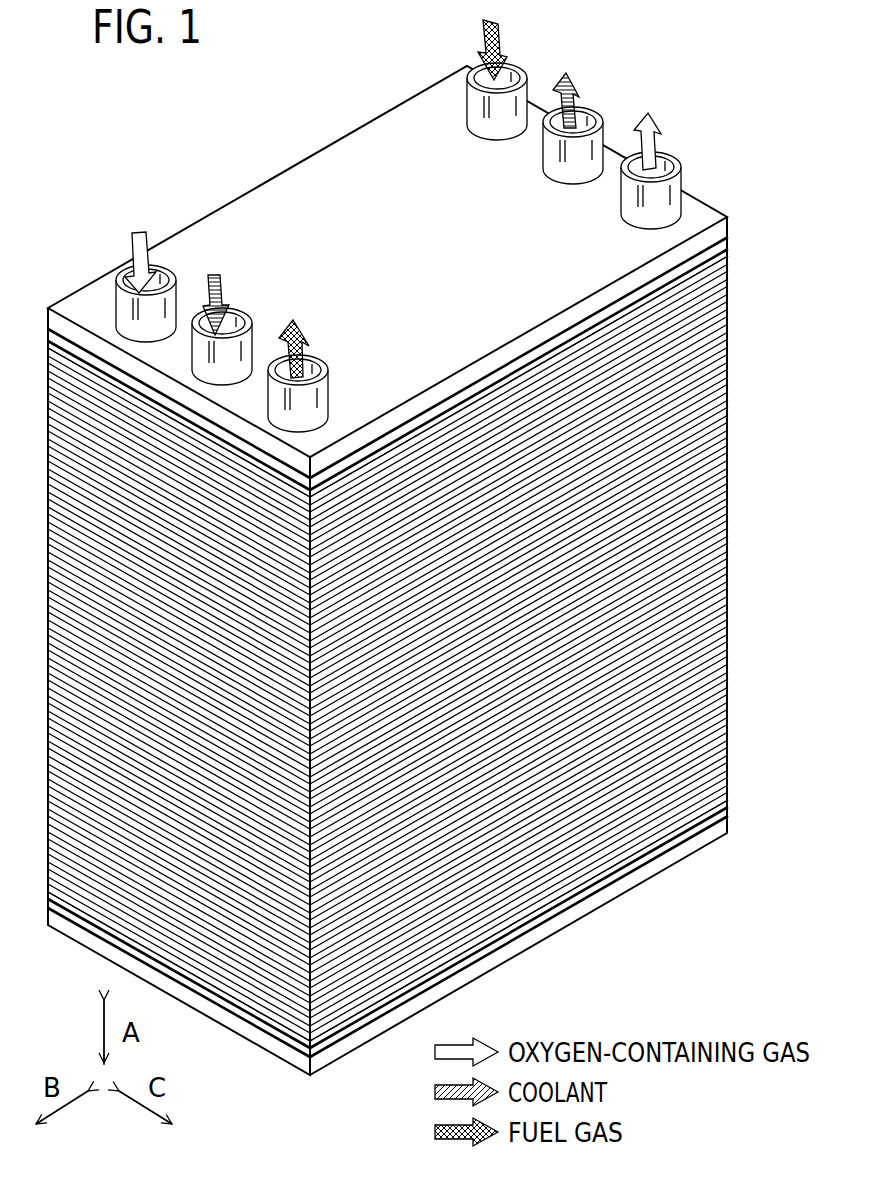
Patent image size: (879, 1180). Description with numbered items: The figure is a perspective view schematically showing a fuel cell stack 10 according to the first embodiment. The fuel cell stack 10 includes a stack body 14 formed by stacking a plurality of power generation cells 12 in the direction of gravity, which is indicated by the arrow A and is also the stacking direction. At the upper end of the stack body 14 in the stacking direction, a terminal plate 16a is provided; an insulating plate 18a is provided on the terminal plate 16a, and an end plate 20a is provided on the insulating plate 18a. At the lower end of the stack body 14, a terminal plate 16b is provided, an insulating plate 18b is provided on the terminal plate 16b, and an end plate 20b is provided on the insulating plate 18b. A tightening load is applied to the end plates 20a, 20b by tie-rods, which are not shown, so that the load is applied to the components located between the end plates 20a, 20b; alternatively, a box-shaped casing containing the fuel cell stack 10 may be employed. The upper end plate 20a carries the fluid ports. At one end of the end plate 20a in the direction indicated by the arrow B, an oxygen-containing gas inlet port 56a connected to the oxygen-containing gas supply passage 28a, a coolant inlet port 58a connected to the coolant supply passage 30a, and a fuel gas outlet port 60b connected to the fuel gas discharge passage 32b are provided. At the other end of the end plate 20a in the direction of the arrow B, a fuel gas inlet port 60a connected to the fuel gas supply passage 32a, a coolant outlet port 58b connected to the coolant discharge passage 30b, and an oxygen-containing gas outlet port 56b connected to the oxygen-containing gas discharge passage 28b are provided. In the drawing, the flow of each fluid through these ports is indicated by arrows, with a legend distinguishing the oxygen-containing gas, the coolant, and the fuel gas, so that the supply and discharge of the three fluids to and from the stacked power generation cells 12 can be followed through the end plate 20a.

The fuel cell stack 10 is at (126, 124).
The power generation cell 12 is at (729, 373).
The stack body 14 is at (456, 648).
The terminal plate 16a is at (728, 257).
The terminal plate 16b is at (728, 802).
The insulating plate 18a is at (728, 242).
The insulating plate 18b is at (728, 815).
The end plate 20a is at (705, 201).
The end plate 20b is at (673, 868).
The oxygen-containing gas inlet port 56a is at (210, 287).
The oxygen-containing gas supply passage 28a is at (166, 265).
The coolant inlet port 58a is at (286, 330).
The coolant supply passage 30a is at (243, 309).
The fuel gas outlet port 60b is at (363, 376).
The fuel gas discharge passage 32b is at (315, 352).
The fuel gas inlet port 60a is at (562, 80).
The fuel gas supply passage 32a is at (515, 63).
The coolant outlet port 58b is at (639, 128).
The coolant discharge passage 30b is at (592, 108).
The oxygen-containing gas outlet port 56b is at (715, 171).
The oxygen-containing gas discharge passage 28b is at (669, 152).